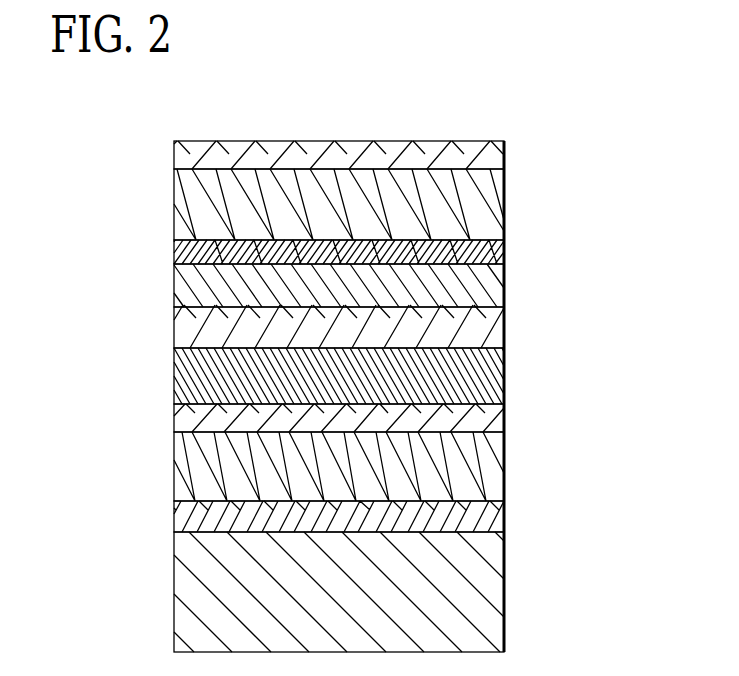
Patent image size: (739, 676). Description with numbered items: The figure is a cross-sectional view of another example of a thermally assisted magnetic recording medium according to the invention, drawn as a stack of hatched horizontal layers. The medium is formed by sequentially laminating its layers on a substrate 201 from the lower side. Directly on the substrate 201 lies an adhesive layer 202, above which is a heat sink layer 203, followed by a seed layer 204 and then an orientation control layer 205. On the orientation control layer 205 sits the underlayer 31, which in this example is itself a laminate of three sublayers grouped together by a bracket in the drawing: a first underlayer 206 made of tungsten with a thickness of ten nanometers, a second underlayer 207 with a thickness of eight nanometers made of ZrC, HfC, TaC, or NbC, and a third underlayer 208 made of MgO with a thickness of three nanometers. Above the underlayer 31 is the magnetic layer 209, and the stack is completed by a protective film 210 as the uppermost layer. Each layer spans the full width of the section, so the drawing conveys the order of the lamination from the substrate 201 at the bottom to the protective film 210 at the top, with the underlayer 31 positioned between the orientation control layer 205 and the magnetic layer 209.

The substrate 201 is at (499, 590).
The adhesive layer 202 is at (499, 512).
The heat sink layer 203 is at (499, 464).
The seed layer 204 is at (499, 418).
The orientation control layer 205 is at (499, 374).
The first underlayer 206 is at (392, 326).
The second underlayer 207 is at (499, 286).
The third underlayer 208 is at (499, 249).
The magnetic layer 209 is at (499, 204).
The protective film 210 is at (499, 157).
The underlayer 31 is at (422, 292).